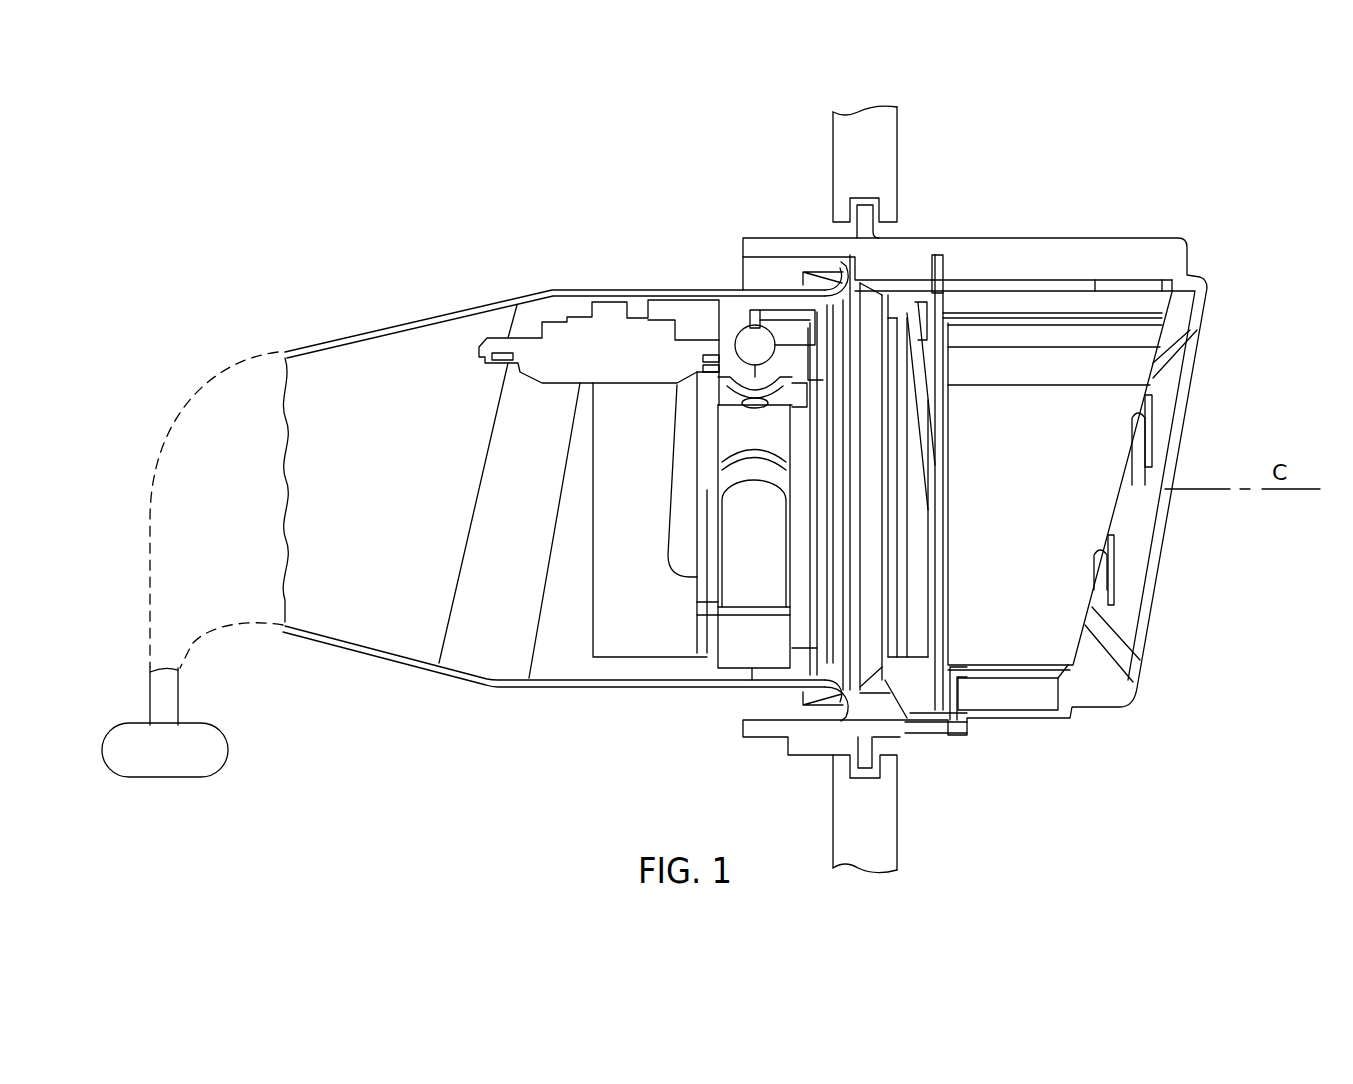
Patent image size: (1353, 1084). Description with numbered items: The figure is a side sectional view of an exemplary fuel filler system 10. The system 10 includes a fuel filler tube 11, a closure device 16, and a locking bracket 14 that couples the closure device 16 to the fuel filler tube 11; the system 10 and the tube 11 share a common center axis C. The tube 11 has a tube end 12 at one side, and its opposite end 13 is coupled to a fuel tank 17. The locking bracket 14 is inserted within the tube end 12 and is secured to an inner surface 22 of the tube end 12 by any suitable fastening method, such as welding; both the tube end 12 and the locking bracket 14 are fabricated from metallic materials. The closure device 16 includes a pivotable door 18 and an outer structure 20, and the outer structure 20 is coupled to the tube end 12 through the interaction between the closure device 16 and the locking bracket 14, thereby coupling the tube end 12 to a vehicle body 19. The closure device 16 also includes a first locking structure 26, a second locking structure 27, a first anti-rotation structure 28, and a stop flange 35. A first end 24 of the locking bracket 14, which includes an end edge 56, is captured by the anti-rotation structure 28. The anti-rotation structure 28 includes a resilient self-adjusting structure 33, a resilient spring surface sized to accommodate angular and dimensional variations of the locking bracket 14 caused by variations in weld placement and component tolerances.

The fuel filler system 10 is at (751, 150).
The fuel filler tube 11 is at (452, 310).
The tube end 12 is at (701, 272).
The opposite end 13 is at (160, 694).
The locking bracket 14 is at (735, 632).
The closure device 16 is at (707, 520).
The fuel tank 17 is at (173, 763).
The pivotable door 18 is at (562, 348).
The vehicle body 19 is at (848, 143).
The outer structure 20 is at (980, 712).
The inner surface 22 is at (657, 678).
The first end 24 is at (757, 435).
The first locking structure 26 is at (690, 421).
The second locking structure 27 is at (707, 643).
The first anti-rotation structure 28 is at (757, 397).
The resilient self-adjusting structure 33 is at (750, 395).
The stop flange 35 is at (800, 560).
The end edge 56 is at (712, 385).